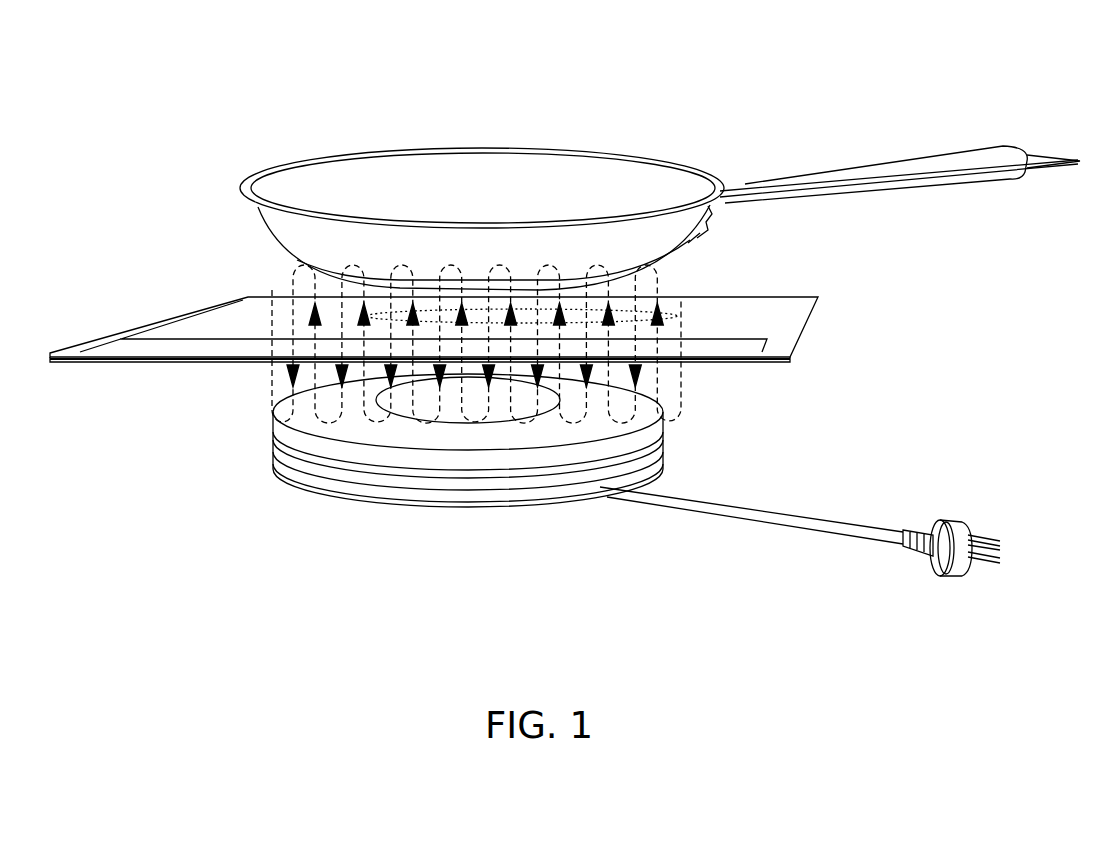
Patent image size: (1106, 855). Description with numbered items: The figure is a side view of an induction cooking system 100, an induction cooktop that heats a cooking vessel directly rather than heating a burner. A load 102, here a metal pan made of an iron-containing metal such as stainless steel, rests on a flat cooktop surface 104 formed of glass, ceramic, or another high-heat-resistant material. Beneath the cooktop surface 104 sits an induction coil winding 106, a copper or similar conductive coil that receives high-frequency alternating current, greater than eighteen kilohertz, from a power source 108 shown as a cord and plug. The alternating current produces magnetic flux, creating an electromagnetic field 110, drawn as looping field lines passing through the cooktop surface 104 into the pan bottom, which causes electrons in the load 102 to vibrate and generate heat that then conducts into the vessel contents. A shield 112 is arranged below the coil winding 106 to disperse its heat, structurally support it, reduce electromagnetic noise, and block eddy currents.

The induction cooking system 100 is at (72, 148).
The load 102 is at (612, 176).
The cooktop surface 104 is at (177, 342).
The induction coil winding 106 is at (345, 432).
The power source 108 is at (673, 495).
The electromagnetic field 110 is at (243, 370).
The shield 112 is at (415, 488).